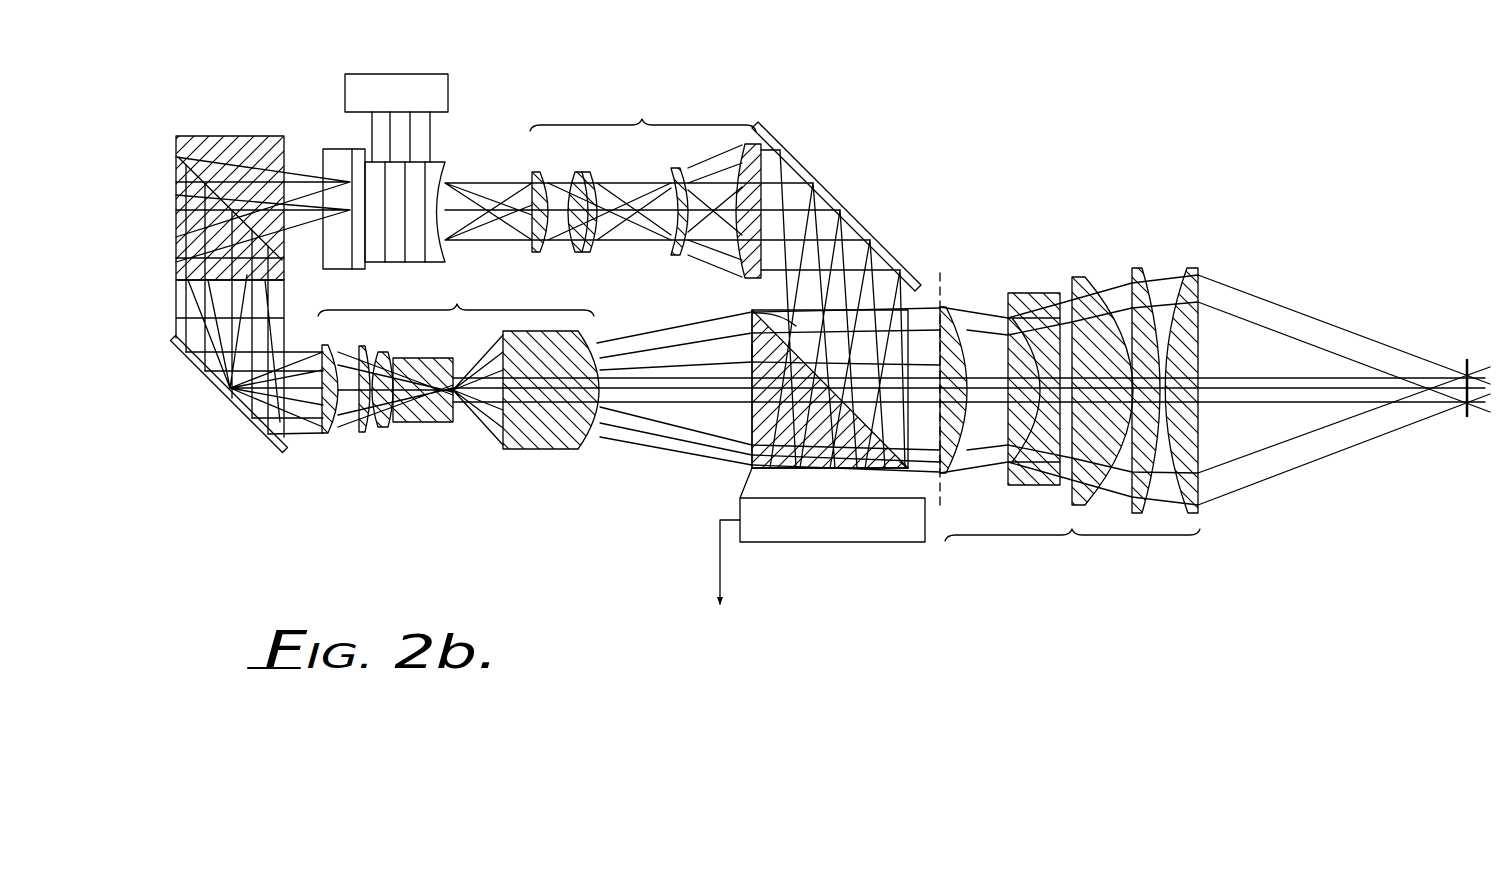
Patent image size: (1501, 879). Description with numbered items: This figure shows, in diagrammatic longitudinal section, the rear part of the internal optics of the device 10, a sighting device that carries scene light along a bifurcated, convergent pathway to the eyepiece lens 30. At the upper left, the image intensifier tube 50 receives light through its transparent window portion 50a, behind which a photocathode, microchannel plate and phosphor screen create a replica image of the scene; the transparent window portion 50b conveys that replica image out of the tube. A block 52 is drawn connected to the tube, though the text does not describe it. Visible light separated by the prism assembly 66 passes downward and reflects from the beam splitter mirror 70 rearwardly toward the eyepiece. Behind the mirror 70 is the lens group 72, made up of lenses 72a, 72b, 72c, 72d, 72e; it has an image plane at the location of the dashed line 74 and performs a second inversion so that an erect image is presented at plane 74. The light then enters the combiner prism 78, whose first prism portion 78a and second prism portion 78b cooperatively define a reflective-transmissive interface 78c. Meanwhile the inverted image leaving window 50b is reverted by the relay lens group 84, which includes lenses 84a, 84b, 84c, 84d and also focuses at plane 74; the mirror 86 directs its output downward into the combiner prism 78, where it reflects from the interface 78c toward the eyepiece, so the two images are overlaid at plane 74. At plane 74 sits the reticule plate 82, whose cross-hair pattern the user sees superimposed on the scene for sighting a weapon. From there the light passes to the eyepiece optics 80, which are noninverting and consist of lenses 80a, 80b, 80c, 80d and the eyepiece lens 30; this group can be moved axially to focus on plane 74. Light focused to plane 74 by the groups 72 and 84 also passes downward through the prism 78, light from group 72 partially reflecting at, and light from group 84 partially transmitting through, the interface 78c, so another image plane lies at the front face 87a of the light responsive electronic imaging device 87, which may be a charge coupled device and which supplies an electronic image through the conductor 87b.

The device 10 is at (732, 64).
The eyepiece lens 30 is at (1200, 270).
The image intensifier tube 50 is at (396, 203).
The transparent window portion 50a is at (324, 148).
The transparent window portion 50b is at (448, 158).
The controller 52 is at (408, 105).
The prism assembly 66 is at (228, 130).
The beam splitter mirror 70 is at (232, 410).
The lens group 72 is at (439, 393).
The lens 72a is at (325, 436).
The lens 72b is at (365, 435).
The lens 72c is at (387, 430).
The lens 72d is at (447, 423).
The lens 72e is at (548, 452).
The image plane 74 is at (944, 276).
The combiner prism 78 is at (798, 393).
The first prism portion 78a is at (752, 352).
The second prism portion 78b is at (752, 312).
The reflective-transmissive interface 78c is at (860, 412).
The eyepiece optics 80 is at (1093, 397).
The lens 80a is at (966, 350).
The lens 80b is at (1043, 296).
The lens 80c is at (1076, 277).
The lens 80d is at (1138, 267).
The reticule plate 82 is at (933, 458).
The relay lens group 84 is at (624, 202).
The lens 84a is at (538, 256).
The lens 84b is at (581, 256).
The lens 84c is at (678, 258).
The lens 84d is at (742, 275).
The mirror 86 is at (826, 196).
The light responsive electronic imaging device 87 is at (787, 536).
The front face 87a is at (747, 499).
The conductor 87b is at (718, 560).